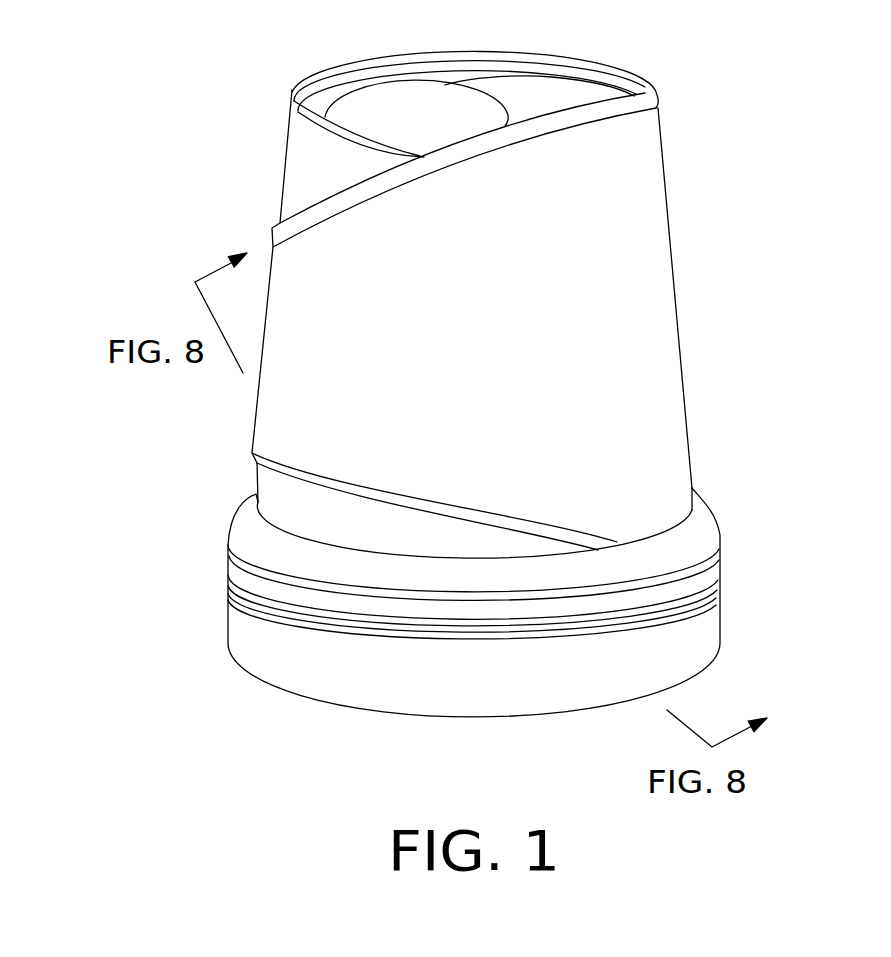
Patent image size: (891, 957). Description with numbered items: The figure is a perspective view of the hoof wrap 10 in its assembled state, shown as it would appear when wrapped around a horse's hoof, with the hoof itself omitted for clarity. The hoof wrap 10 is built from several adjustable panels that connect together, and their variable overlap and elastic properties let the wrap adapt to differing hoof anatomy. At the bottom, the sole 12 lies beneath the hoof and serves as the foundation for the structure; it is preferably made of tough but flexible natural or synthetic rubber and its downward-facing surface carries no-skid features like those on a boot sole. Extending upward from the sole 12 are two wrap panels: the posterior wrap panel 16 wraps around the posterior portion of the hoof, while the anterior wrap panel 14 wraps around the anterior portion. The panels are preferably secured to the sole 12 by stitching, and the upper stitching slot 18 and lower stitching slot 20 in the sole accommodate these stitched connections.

The hoof wrap 10 is at (755, 398).
The sole 12 is at (322, 657).
The anterior wrap panel 14 is at (625, 357).
The posterior wrap panel 16 is at (308, 177).
The upper stitching slot 18 is at (722, 580).
The lower stitching slot 20 is at (687, 607).